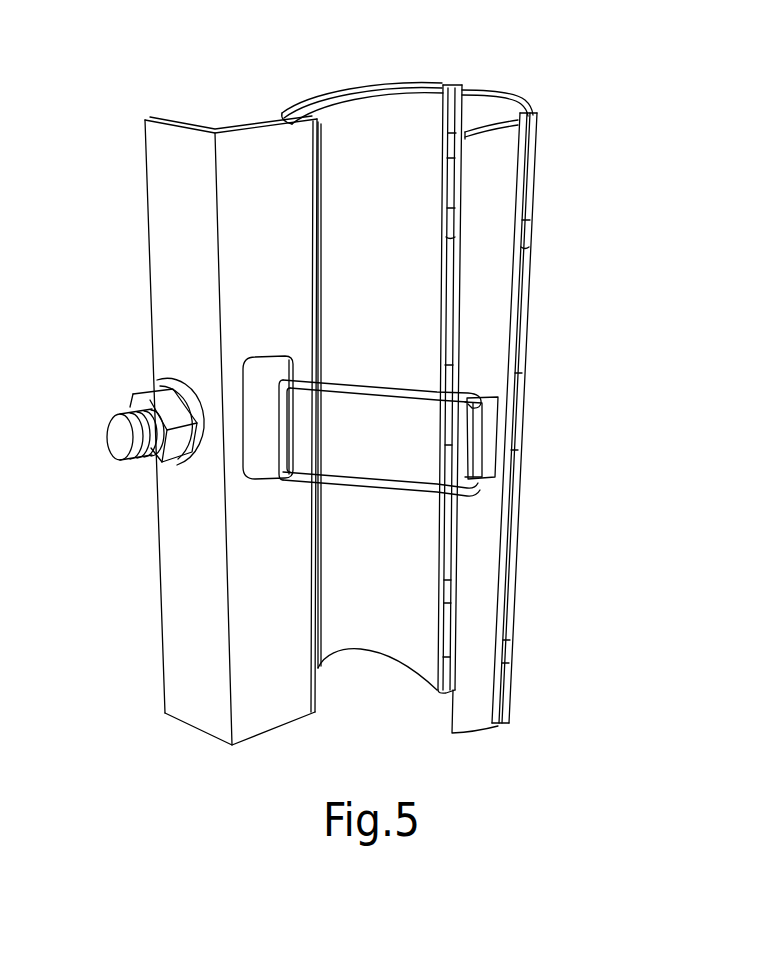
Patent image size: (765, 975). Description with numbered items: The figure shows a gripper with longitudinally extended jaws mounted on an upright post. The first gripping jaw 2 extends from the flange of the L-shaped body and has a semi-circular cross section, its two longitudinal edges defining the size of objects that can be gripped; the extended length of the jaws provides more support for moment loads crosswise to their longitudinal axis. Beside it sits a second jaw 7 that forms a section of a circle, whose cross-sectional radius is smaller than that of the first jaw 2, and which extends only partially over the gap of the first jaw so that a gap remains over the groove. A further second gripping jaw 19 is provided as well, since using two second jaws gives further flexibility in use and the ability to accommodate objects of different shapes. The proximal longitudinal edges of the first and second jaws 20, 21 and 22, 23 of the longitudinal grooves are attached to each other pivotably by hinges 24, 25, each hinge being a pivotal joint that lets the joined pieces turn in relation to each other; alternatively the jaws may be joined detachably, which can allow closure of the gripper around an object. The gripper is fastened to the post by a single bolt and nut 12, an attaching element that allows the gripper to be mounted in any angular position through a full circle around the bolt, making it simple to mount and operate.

The first gripping jaw 2 is at (343, 107).
The second jaw 7 is at (537, 97).
The bolt and nut 12 is at (147, 392).
The second gripping jaw 19 is at (503, 282).
The proximal longitudinal edge of first jaw 20 is at (453, 100).
The proximal longitudinal edge of second jaw 21 is at (460, 90).
The proximal longitudinal edge of first jaw 22 is at (515, 533).
The proximal longitudinal edge of second jaw 23 is at (493, 543).
The hinge 24 is at (460, 93).
The hinge 25 is at (510, 425).